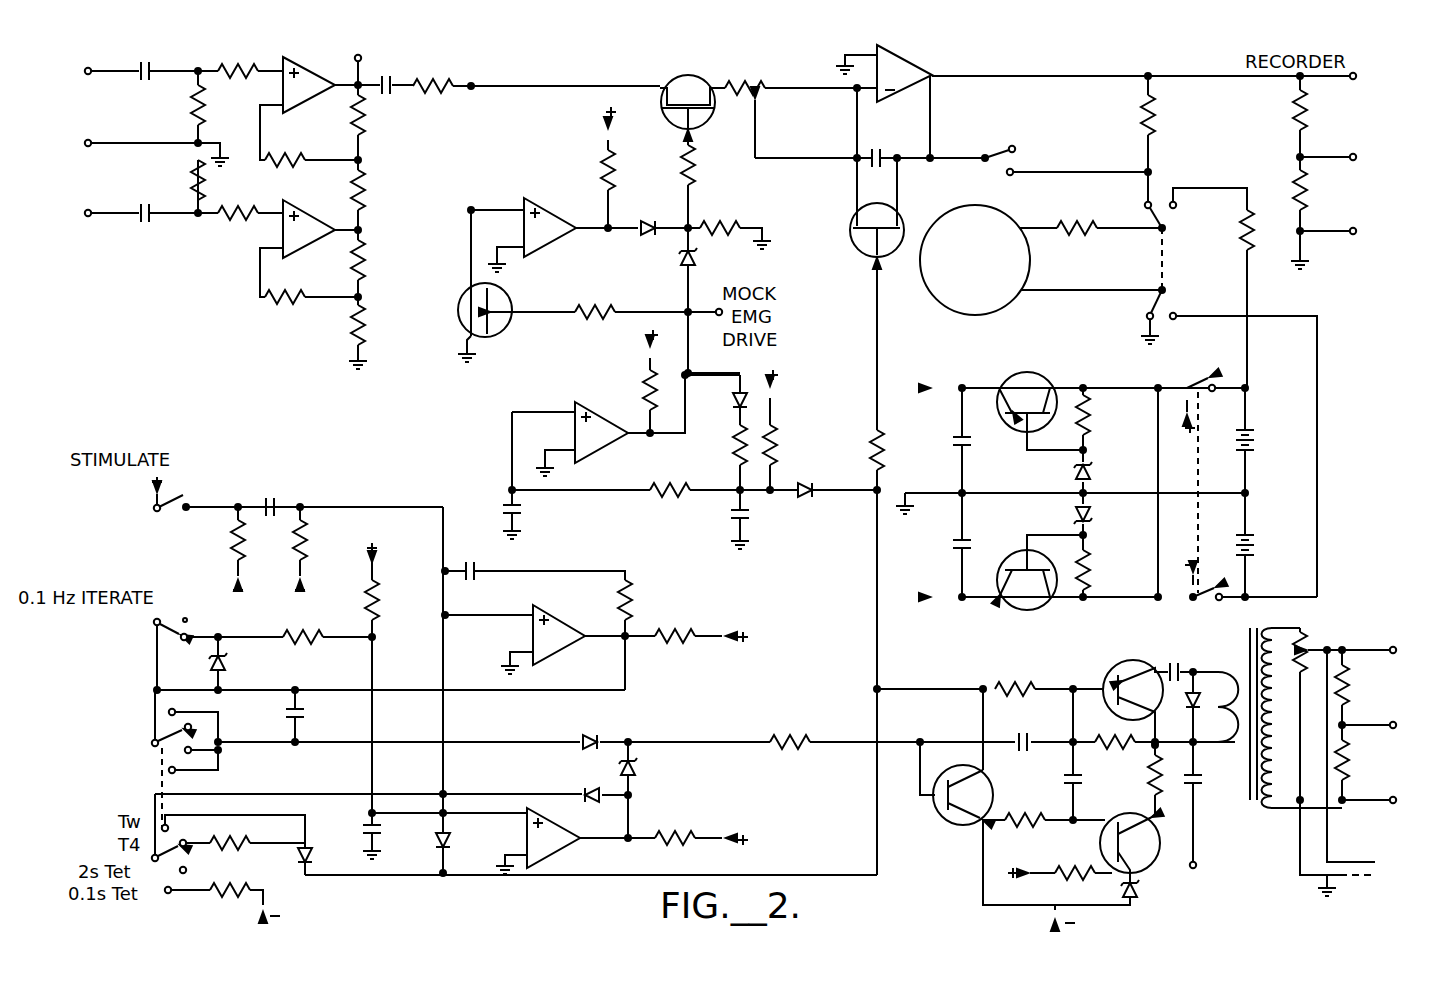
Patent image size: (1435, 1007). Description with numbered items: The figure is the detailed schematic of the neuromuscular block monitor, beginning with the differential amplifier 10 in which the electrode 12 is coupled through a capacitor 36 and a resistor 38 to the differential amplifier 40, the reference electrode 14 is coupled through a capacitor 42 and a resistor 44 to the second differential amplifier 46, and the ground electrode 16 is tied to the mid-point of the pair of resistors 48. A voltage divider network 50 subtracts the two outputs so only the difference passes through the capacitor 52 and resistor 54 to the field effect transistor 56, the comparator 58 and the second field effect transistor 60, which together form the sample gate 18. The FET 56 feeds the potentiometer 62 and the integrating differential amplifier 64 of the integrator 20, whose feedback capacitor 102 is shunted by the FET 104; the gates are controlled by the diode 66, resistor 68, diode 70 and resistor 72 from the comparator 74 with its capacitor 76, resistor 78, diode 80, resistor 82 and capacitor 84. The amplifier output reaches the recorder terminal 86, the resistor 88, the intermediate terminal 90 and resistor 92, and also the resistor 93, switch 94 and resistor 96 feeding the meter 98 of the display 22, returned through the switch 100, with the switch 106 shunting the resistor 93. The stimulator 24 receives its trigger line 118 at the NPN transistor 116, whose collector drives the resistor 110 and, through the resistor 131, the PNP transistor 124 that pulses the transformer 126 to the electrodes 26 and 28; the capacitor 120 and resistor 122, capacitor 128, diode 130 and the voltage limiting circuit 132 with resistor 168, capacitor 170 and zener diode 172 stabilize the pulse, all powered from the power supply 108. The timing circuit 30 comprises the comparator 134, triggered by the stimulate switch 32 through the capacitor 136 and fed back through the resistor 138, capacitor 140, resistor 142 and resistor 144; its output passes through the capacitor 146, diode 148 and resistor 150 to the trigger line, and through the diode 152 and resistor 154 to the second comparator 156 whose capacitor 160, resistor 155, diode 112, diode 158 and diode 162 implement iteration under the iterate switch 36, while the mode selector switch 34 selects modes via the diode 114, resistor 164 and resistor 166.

The differential amplifier 10 is at (221, 198).
The electrode 12 is at (88, 68).
The reference electrode 14 is at (117, 170).
The ground electrode 16 is at (88, 140).
The sample gate 18 is at (694, 73).
The integrator 20 is at (890, 87).
The display 22 is at (1041, 258).
The stimulator 24 is at (1141, 774).
The active stimulus electrode 26 is at (1376, 862).
The stimulus return electrode 28 is at (1381, 883).
The timing circuit 30 is at (597, 617).
The stimulate switch 32 is at (170, 510).
The mode selector switch 34 is at (150, 764).
The capacitor 36 is at (143, 69).
The resistor 38 is at (245, 66).
The differential amplifier 40 is at (286, 60).
The capacitor 42 is at (143, 210).
The resistor 44 is at (257, 210).
The second differential amplifier 46 is at (290, 208).
The pair of resistors 48 is at (108, 143).
The voltage divider network 50 is at (372, 166).
The capacitor 52 is at (386, 82).
The resistor 54 is at (442, 84).
The field effect transistor 56 is at (702, 123).
The comparator 58 is at (536, 200).
The second field effect transistor 60 is at (510, 286).
The potentiometer 62 is at (761, 84).
The integrating differential amplifier 64 is at (878, 46).
The diode 66 is at (644, 220).
The resistor 68 is at (699, 168).
The diode 70 is at (696, 257).
The resistor 72 is at (592, 310).
The comparator 74 is at (596, 412).
The capacitor 76 is at (524, 510).
The resistor 78 is at (658, 488).
The diode 80 is at (806, 484).
The resistor 82 is at (774, 434).
The capacitor 84 is at (749, 518).
The recorder terminal 86 is at (1356, 84).
The resistor 88 is at (1304, 114).
The intermediate terminal 90 is at (1356, 164).
The second resistor 92 is at (1304, 192).
The resistor 93 is at (1152, 116).
The switch 94 is at (1166, 222).
The resistor 96 is at (1075, 222).
The meter 98 is at (1004, 306).
The second switch 100 is at (1161, 320).
The capacitor 102 is at (875, 154).
The FET 104 is at (893, 214).
The switch 106 is at (993, 148).
The power supply 108 is at (1335, 494).
The resistor 110 is at (881, 440).
The diode 112 is at (450, 834).
The diode 114 is at (311, 854).
The NPN transistor 116 is at (954, 826).
The input trigger line 118 is at (886, 736).
The capacitor 120 is at (1030, 738).
The resistor 122 is at (1119, 738).
The PNP transistor 124 is at (1132, 664).
The transformer 126 is at (1250, 628).
The capacitor 128 is at (1173, 664).
The diode 130 is at (1186, 704).
The resistor 131 is at (1010, 682).
The voltage limiting circuit 132 is at (1118, 878).
The comparator 134 is at (552, 620).
The capacitor 136 is at (272, 504).
The resistor 138 is at (629, 586).
The capacitor 140 is at (472, 566).
The biasing resistor 142 is at (666, 632).
The resistor 144 is at (304, 540).
The capacitor 146 is at (304, 710).
The diode 148 is at (590, 738).
The resistor 150 is at (784, 738).
The diode 152 is at (226, 662).
The resistor 154 is at (297, 634).
The resistor 155 is at (374, 598).
The second comparator 156 is at (554, 830).
The diode 158 is at (636, 766).
The capacitor 160 is at (376, 830).
The diode 162 is at (587, 788).
The resistor 164 is at (244, 848).
The resistor 166 is at (214, 906).
The resistor 168 is at (1150, 770).
The capacitor 170 is at (1084, 782).
The zener diode 172 is at (1134, 900).